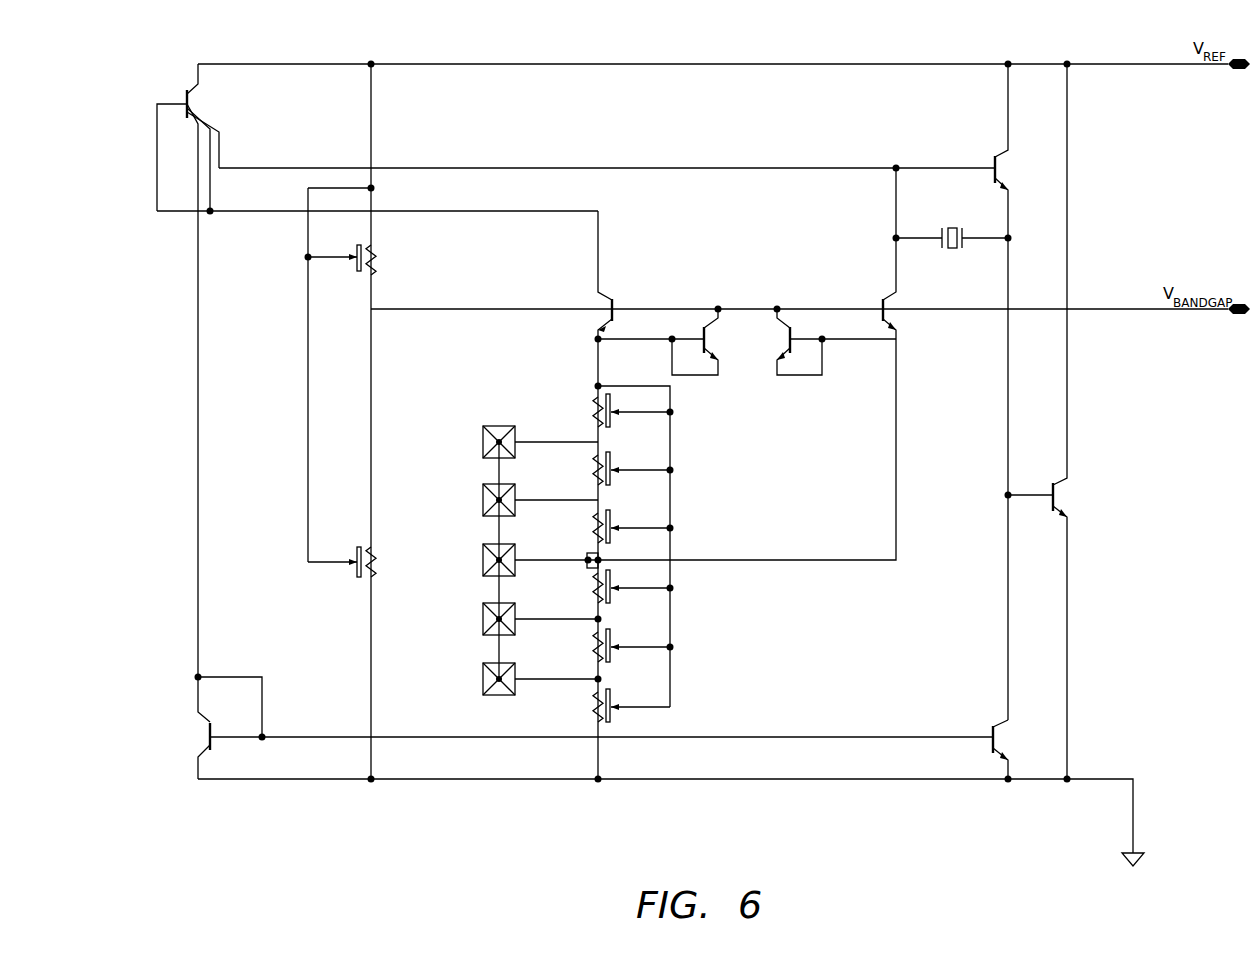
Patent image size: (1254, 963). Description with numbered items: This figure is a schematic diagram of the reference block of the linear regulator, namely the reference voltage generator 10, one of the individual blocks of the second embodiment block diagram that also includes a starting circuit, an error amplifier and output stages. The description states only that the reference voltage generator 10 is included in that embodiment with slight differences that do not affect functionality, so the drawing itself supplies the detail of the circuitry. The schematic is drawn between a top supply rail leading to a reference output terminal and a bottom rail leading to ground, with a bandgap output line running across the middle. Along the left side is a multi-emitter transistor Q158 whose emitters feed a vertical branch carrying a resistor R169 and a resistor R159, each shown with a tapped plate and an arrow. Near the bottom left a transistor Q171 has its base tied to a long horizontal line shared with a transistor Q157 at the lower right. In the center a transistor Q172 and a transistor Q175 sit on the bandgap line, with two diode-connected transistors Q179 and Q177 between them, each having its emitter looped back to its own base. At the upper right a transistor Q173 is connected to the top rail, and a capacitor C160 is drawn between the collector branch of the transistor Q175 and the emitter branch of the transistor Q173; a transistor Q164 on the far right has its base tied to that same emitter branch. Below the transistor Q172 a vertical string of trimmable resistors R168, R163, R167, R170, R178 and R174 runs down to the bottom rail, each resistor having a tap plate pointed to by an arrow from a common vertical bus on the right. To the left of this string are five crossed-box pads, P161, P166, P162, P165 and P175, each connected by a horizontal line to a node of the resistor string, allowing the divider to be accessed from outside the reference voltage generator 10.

The reference voltage generator 10 is at (412, 35).
The multi-emitter PNP transistor Q158 is at (182, 370).
The resistor R169 is at (341, 250).
The resistor R159 is at (342, 548).
The transistor Q171 is at (594, 727).
The transistor Q172 is at (624, 298).
The diode-connected transistor Q179 is at (660, 341).
The diode-connected transistor Q177 is at (835, 341).
The transistor Q175 is at (747, 364).
The transistor Q173 is at (984, 392).
The capacitor C160 is at (952, 226).
The transistor Q164 is at (1036, 421).
The transistor Q157 is at (978, 741).
The trim resistor R168 is at (631, 407).
The trim resistor R163 is at (631, 465).
The trim resistor R167 is at (631, 524).
The trim resistor R170 is at (631, 584).
The trim resistor R178 is at (631, 638).
The trim resistor R174 is at (631, 698).
The probe pad P161 is at (515, 442).
The probe pad P166 is at (515, 500).
The probe pad P162 is at (517, 560).
The probe pad P165 is at (517, 619).
The probe pad P175 is at (517, 679).